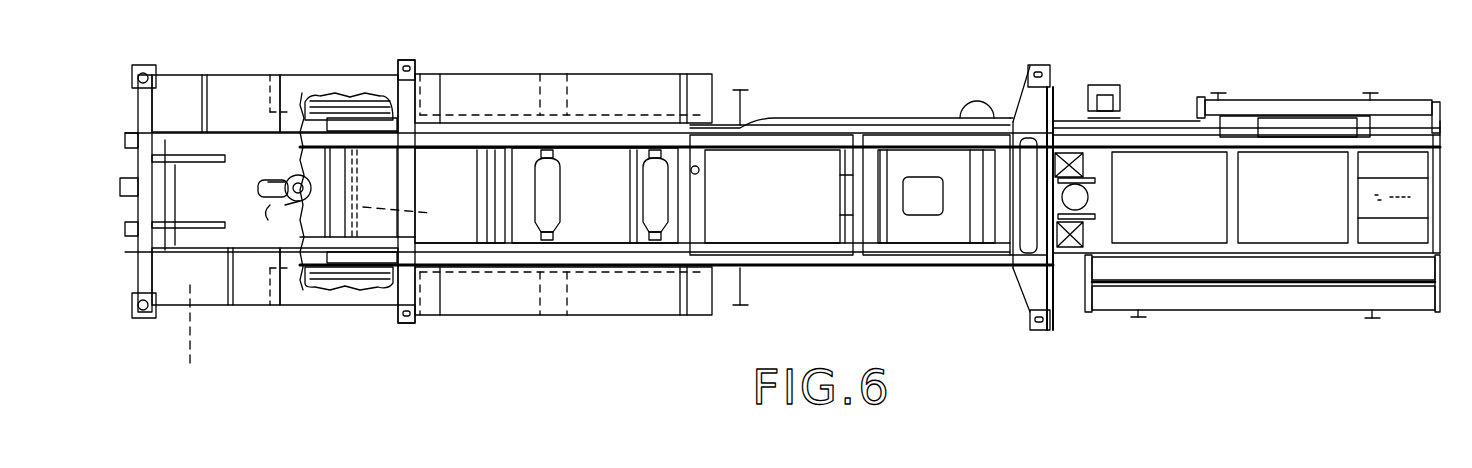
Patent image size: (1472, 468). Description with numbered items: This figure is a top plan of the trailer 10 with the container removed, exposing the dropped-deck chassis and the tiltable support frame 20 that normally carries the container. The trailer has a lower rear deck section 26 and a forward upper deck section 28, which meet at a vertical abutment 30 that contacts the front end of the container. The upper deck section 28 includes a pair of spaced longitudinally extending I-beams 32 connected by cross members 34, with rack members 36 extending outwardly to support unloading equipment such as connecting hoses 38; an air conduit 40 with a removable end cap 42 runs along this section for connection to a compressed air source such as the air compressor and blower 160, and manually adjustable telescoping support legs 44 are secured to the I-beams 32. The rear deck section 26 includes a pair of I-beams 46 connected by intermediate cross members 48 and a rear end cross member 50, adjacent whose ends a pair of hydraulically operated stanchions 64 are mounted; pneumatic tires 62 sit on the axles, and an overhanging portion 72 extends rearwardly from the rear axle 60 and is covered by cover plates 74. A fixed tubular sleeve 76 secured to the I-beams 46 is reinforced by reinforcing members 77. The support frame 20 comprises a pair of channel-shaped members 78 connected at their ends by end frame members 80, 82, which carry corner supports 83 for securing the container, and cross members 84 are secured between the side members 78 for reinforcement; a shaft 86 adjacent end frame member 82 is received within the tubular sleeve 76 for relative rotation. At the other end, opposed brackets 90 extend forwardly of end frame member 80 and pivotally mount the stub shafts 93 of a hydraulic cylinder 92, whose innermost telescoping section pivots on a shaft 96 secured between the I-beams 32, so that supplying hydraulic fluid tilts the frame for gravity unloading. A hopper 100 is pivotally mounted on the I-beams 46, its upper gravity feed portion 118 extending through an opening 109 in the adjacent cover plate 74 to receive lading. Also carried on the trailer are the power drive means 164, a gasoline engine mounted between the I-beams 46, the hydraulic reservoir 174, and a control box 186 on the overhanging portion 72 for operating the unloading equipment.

The trailer 10 is at (890, 105).
The tiltable support frame 20 is at (817, 112).
The rear deck section 26 is at (730, 128).
The upper deck section 28 is at (1186, 122).
The vertical abutment 30 is at (1052, 248).
The I-beams 32 is at (1334, 147).
The cross members 34 is at (1235, 207).
The rack members 36 is at (1373, 94).
The connecting hoses 38 is at (1293, 108).
The air conduit 40 is at (1239, 126).
The removable end cap 42 is at (1446, 124).
The telescoping support legs 44 is at (1106, 98).
The I-beams 46 is at (752, 143).
The intermediate cross members 48 is at (505, 190).
The rear end cross member 50 is at (147, 116).
The rear axle 60 is at (328, 166).
The pneumatic tires 62 is at (344, 99).
The stanchions 64 is at (142, 73).
The overhanging portion 72 is at (266, 70).
The cover plates 74 is at (230, 97).
The tubular sleeve 76 is at (362, 187).
The reinforcing members 77 is at (375, 157).
The channel-shaped members 78 is at (644, 128).
The end frame member 80 is at (1027, 110).
The end frame member 82 is at (410, 222).
The corner supports 83 is at (415, 62).
The cross members 84 is at (668, 213).
The shaft 86 is at (410, 215).
The brackets 90 is at (1088, 148).
The hydraulic cylinder 92 is at (1080, 197).
The stub shafts 93 is at (1080, 181).
The shaft 96 is at (1085, 237).
The hopper 100 is at (275, 178).
The opening 109 is at (270, 205).
The upper gravity feed portion 118 is at (292, 208).
The air compressor and blower 160 is at (973, 115).
The power drive means 164 is at (935, 232).
The reservoir 174 is at (750, 202).
The control box 186 is at (190, 338).